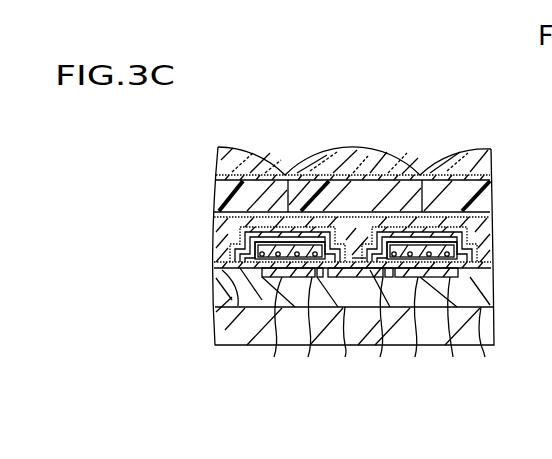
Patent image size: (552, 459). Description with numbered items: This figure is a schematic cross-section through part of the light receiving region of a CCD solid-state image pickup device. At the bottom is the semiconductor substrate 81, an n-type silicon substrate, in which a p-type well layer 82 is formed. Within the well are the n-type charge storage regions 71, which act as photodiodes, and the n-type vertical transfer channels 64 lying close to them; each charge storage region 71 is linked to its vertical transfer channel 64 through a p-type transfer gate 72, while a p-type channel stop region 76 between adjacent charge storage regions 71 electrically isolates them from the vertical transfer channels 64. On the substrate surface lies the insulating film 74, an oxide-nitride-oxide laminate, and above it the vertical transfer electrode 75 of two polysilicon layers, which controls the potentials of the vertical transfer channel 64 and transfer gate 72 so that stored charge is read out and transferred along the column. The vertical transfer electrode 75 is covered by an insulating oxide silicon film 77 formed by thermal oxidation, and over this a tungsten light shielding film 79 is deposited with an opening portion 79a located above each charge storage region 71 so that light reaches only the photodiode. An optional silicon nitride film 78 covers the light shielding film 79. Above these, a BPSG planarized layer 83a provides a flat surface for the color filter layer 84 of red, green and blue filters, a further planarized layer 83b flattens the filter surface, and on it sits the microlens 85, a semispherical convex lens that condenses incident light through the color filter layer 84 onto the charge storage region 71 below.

The microlens 85 is at (475, 153).
The planarized layer 83b is at (488, 177).
The color filter layer 84 is at (487, 192).
The planarized layer 83a is at (487, 225).
The silicon nitride film 78 is at (215, 217).
The light shielding film 79 is at (222, 243).
The opening portion 79a is at (360, 240).
The vertical transfer electrode 75 is at (217, 316).
The insulating film 74 is at (222, 265).
The insulating oxide silicon film 77 is at (218, 290).
The p-type well layer 82 is at (487, 295).
The semiconductor substrate 81 is at (488, 320).
The vertical transfer channel 64 is at (342, 332).
The transfer gate 72 is at (379, 332).
The charge storage region 71 is at (415, 347).
The channel stop region 76 is at (377, 332).